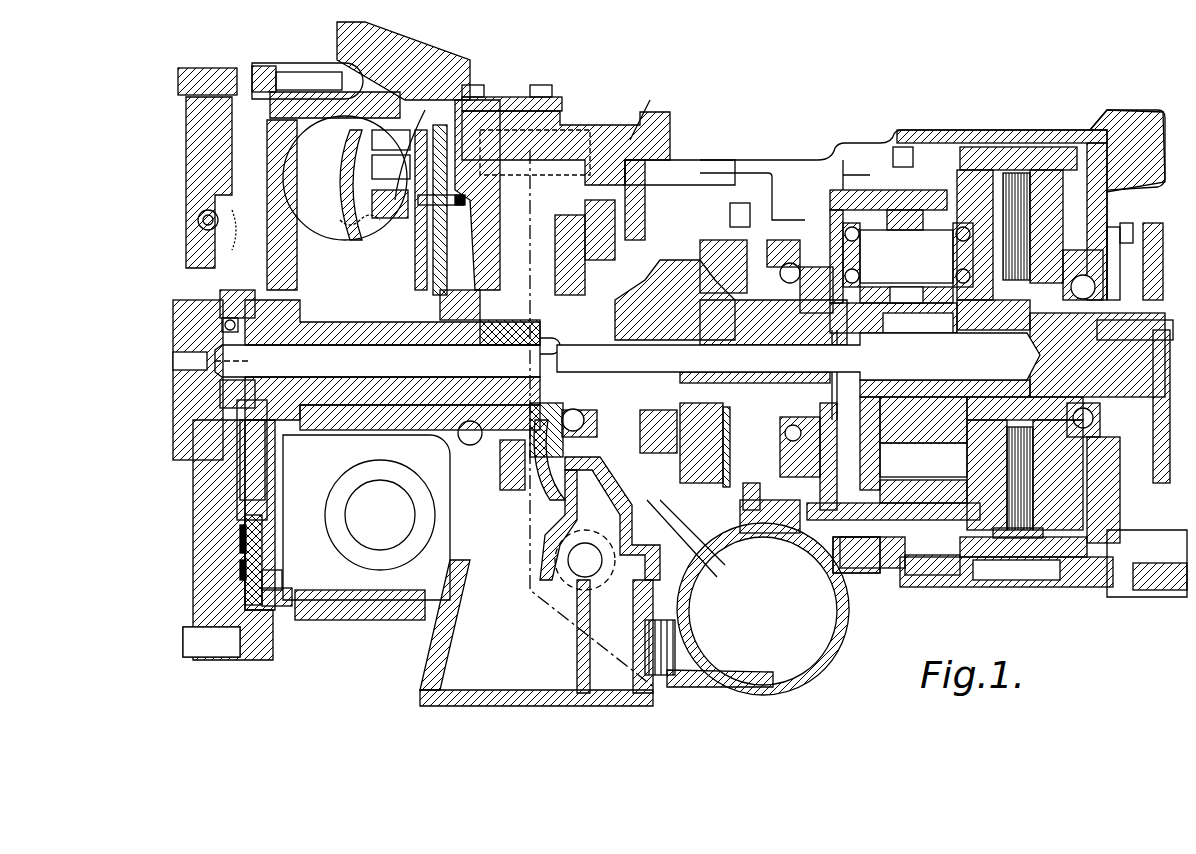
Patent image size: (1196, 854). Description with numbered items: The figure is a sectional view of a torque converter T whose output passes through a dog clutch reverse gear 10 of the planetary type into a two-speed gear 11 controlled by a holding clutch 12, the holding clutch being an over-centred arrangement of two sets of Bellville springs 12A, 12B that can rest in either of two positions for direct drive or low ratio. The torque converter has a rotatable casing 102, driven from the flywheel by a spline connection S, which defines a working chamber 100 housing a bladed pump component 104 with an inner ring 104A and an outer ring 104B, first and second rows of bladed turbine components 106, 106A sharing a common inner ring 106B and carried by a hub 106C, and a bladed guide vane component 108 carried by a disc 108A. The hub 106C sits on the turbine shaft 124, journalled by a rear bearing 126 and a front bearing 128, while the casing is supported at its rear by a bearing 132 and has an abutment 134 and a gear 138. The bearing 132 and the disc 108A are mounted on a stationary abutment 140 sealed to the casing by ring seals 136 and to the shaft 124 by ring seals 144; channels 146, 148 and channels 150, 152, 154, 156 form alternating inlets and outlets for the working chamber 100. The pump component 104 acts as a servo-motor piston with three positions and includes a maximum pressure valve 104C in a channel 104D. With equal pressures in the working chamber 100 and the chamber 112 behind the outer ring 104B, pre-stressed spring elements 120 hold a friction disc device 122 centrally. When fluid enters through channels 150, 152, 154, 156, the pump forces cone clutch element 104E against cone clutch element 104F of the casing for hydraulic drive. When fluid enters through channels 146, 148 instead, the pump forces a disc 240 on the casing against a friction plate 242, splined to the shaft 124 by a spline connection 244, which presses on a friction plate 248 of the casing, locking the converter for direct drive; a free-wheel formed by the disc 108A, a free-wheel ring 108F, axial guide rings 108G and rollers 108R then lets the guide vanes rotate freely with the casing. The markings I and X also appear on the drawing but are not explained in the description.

The dog clutch reverse gear 10 is at (712, 218).
The two-speed gear 11 is at (862, 186).
The holding clutch 12 is at (1010, 160).
The Bellville springs 12A is at (1010, 183).
The Bellville springs 12B is at (1037, 167).
The working chamber 100 is at (345, 196).
The rotatable casing 102 is at (405, 78).
The bladed pump component 104 is at (253, 378).
The inner ring 104A is at (302, 72).
The outer ring 104B is at (262, 70).
The maximum pressure valve 104C is at (250, 300).
The channel 104D is at (300, 438).
The cone clutch element 104E is at (278, 590).
The cone clutch element 104F is at (330, 625).
The bladed turbine component 106 is at (391, 140).
The bladed turbine component 106A is at (418, 250).
The common inner ring 106B is at (388, 121).
The hub 106C is at (452, 300).
The bladed guide vane component 108 is at (391, 167).
The disc 108A is at (418, 190).
The free-wheel ring 108F is at (410, 200).
The axial guide rings 108G is at (400, 195).
The rollers 108R is at (425, 200).
The chamber 112 is at (242, 470).
The pre-stressed spring elements 120 is at (232, 252).
The friction disc device 122 is at (198, 220).
The turbine shaft 124 is at (645, 300).
The bearing 126 is at (640, 165).
The bearing 128 is at (220, 325).
The bearing 132 is at (490, 322).
The abutment 134 is at (548, 290).
The ring seals 136 is at (540, 488).
The gear 138 is at (512, 492).
The stationary abutment 140 is at (590, 220).
The ring seals 144 is at (702, 222).
The channel 146 is at (600, 470).
The channel 148 is at (355, 245).
The channel 150 is at (563, 205).
The channel 152 is at (544, 345).
The channel 154 is at (377, 361).
The channel 156 is at (250, 337).
The disc 240 is at (265, 605).
The friction plate 242 is at (243, 578).
The spline connection 244 is at (225, 420).
The friction plate 248 is at (243, 546).
The spline connection S is at (190, 100).
The torque converter T is at (425, 110).
The axis I is at (210, 358).
The section line X is at (695, 702).